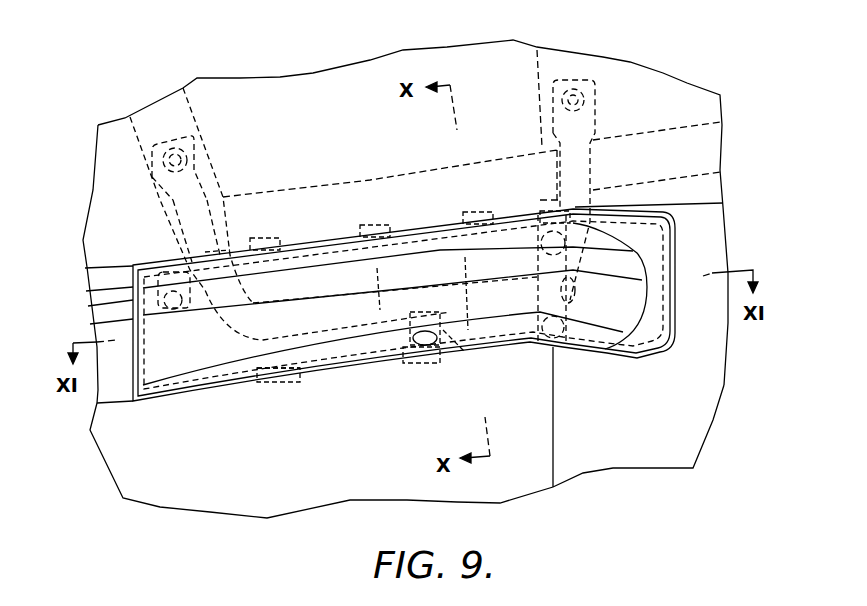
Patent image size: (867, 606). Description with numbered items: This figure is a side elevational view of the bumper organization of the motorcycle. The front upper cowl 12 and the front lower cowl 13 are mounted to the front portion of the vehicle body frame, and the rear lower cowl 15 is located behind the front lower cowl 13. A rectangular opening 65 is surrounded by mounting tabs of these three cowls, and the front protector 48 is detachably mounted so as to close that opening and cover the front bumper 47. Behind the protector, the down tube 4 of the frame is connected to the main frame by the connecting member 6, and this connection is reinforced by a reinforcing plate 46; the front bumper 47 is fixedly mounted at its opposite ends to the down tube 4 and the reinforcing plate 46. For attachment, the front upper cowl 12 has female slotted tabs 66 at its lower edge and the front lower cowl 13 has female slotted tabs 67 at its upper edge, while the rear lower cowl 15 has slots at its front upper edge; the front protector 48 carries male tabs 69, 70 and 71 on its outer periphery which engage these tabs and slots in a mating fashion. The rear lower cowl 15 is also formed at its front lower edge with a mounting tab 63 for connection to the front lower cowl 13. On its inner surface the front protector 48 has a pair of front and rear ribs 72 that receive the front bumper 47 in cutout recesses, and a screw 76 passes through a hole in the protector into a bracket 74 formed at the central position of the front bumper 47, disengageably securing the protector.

The front upper cowl 12 is at (320, 90).
The front lower cowl 13 is at (300, 503).
The rear lower cowl 15 is at (662, 460).
The down tube 4 is at (190, 122).
The connecting member 6 is at (395, 193).
The reinforcing plate 46 is at (627, 70).
The front bumper 47 is at (220, 230).
The front protector 48 is at (207, 400).
The mounting tab 63 is at (680, 307).
The rectangular opening 65 is at (522, 393).
The female slotted tabs 66 is at (288, 250).
The female slotted tabs 67 is at (303, 362).
The male tabs 69 is at (367, 227).
The male tabs 70 is at (437, 383).
The male tabs 71 is at (680, 276).
The ribs 72 is at (478, 260).
The bracket 74 is at (465, 352).
The screw 76 is at (418, 368).